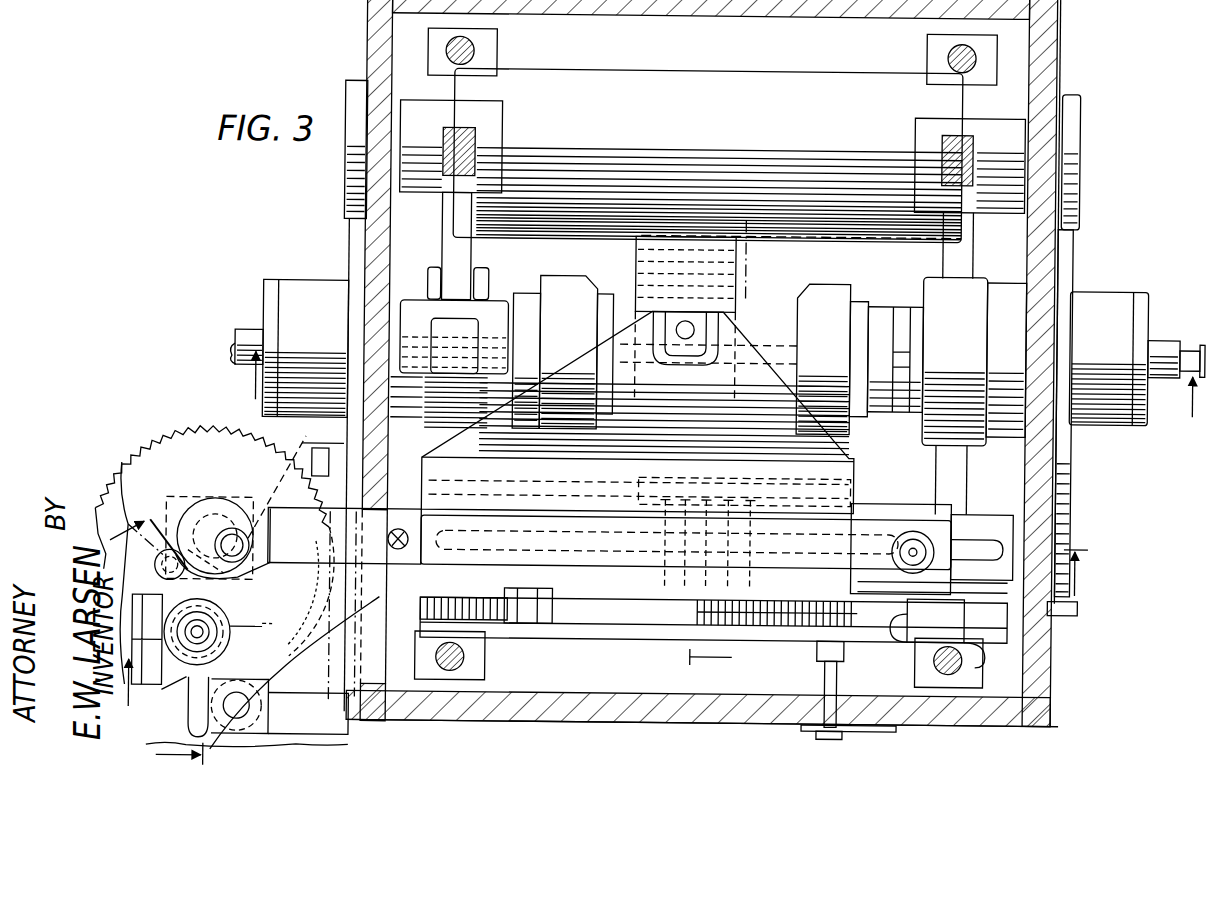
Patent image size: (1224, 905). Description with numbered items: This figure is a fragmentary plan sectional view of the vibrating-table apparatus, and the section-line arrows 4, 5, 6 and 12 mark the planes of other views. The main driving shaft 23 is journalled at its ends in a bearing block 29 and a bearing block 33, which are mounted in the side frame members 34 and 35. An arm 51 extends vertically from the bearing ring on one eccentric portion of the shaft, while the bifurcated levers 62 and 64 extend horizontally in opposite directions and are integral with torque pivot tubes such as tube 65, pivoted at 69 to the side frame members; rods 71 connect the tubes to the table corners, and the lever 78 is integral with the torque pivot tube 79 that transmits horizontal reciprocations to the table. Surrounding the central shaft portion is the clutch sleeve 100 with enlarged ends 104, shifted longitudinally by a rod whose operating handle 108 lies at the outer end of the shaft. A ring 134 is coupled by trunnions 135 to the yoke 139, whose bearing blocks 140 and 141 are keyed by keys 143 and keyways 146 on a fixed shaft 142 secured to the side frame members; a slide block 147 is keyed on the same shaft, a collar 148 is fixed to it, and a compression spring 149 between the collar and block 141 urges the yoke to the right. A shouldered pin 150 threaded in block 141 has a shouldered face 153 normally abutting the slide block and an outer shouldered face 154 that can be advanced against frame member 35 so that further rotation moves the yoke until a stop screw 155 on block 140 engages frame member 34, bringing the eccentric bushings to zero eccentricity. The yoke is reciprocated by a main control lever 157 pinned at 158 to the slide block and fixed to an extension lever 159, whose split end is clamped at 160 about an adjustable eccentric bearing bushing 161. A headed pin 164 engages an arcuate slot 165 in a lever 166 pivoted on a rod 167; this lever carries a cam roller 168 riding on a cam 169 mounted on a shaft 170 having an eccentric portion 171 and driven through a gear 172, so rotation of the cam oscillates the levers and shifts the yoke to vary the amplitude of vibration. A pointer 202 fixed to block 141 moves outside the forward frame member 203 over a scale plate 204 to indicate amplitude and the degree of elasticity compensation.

The section line 4- 4 is at (711, 385).
The section line 5- 5 is at (599, 628).
The section line 6-6 / lever arm 6 is at (257, 604).
The roller axis reference 12 is at (744, 450).
The main driving shaft 23 is at (244, 334).
The bearing block 29 is at (300, 292).
The bearing block 33 is at (1090, 294).
The side frame member 34 is at (379, 48).
The side frame member 35 is at (1056, 40).
The arm 51 is at (463, 336).
The bifurcated lever 62 is at (968, 466).
The bifurcated lever 64 is at (972, 258).
The torque pivot tube 65 is at (608, 640).
The pivot 69 is at (343, 92).
The rod 71 is at (472, 53).
The lever 78 is at (445, 250).
The torque pivot tube 79 is at (686, 82).
The clutch sleeve 100 is at (762, 312).
The enlarged end 104 is at (566, 282).
The operating handle 108 is at (1200, 346).
The ring 134 is at (645, 252).
The trunnion 135 is at (687, 321).
The yoke 139 is at (625, 330).
The bearing block 140 is at (495, 590).
The bearing block 141 is at (808, 646).
The fixed shaft 142 is at (1010, 530).
The key 143 is at (996, 528).
The keyway 146 is at (806, 514).
The slide block 147 is at (966, 615).
The collar 148 is at (646, 596).
The compression spring 149 is at (712, 500).
The shouldered pin 150 is at (1070, 614).
The shouldered face 153 is at (905, 635).
The outer shouldered face 154 is at (994, 657).
The stop screw 155 is at (410, 595).
The main control lever 157 is at (868, 518).
The pin connection 158 is at (905, 555).
The extension lever 159 is at (414, 492).
The clamp 160 is at (138, 605).
The adjustable bearing bushing 161 is at (272, 638).
The headed pin 164 is at (203, 633).
The arcuate slot 165 is at (190, 702).
The lever 166 is at (185, 728).
The rod 167 is at (255, 712).
The cam roller 168 is at (166, 548).
The cam 169 is at (176, 520).
The shaft 170 is at (215, 502).
The eccentric portion 171 is at (240, 532).
The gear 172 is at (192, 437).
The pointer 202 is at (834, 738).
The forward frame member 203 is at (746, 724).
The scale plate 204 is at (875, 732).